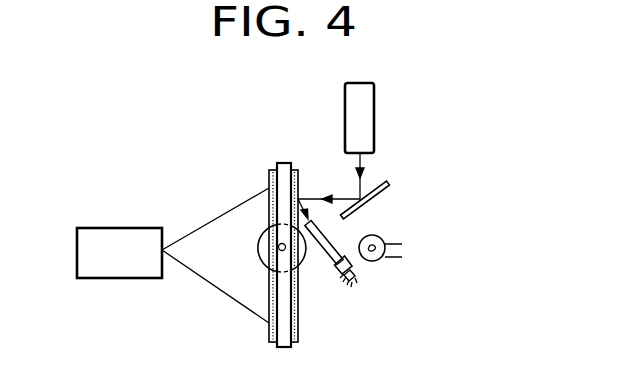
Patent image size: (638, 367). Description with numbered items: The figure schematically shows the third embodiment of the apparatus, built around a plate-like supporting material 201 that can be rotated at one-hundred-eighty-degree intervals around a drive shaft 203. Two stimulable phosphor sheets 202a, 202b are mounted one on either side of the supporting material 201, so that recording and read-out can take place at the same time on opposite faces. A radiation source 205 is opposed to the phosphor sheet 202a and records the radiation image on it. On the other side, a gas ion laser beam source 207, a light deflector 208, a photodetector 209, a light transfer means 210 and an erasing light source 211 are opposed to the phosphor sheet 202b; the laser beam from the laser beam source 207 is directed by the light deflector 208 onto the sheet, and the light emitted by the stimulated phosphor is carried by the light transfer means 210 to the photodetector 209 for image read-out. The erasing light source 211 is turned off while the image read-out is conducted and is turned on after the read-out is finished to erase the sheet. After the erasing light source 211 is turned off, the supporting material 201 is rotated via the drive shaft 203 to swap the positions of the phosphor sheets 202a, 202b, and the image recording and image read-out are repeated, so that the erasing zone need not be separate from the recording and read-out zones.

The plate-like supporting material 201 is at (285, 348).
The phosphor sheet 202a is at (269, 333).
The phosphor sheet 202b is at (298, 334).
The drive shaft 203 is at (273, 252).
The radiation source 205 is at (136, 228).
The gas ion laser beam source 207 is at (375, 118).
The light deflector 208 is at (383, 178).
The photodetector 209 is at (340, 274).
The light transfer means 210 is at (322, 250).
The erasing light source 211 is at (380, 232).